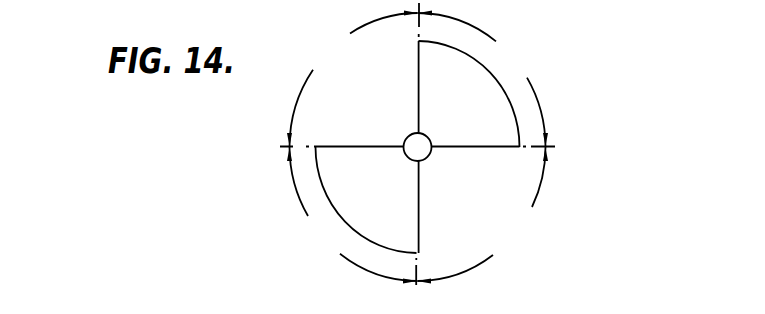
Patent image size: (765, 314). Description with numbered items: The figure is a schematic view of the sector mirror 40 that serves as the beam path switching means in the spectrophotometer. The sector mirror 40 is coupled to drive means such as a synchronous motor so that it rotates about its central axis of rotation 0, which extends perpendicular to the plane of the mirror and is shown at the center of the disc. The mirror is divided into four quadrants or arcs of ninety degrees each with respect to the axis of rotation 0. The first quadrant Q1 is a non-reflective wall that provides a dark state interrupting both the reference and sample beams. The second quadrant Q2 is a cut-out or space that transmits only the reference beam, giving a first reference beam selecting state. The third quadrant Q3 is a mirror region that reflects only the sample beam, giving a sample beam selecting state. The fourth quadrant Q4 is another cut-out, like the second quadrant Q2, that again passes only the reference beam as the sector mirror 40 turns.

The sector mirror 40 is at (446, 144).
The axis of rotation 0 is at (417, 145).
The first quadrant Q1 is at (482, 80).
The second quadrant Q2 is at (482, 214).
The third quadrant Q3 is at (354, 214).
The fourth quadrant Q4 is at (354, 80).